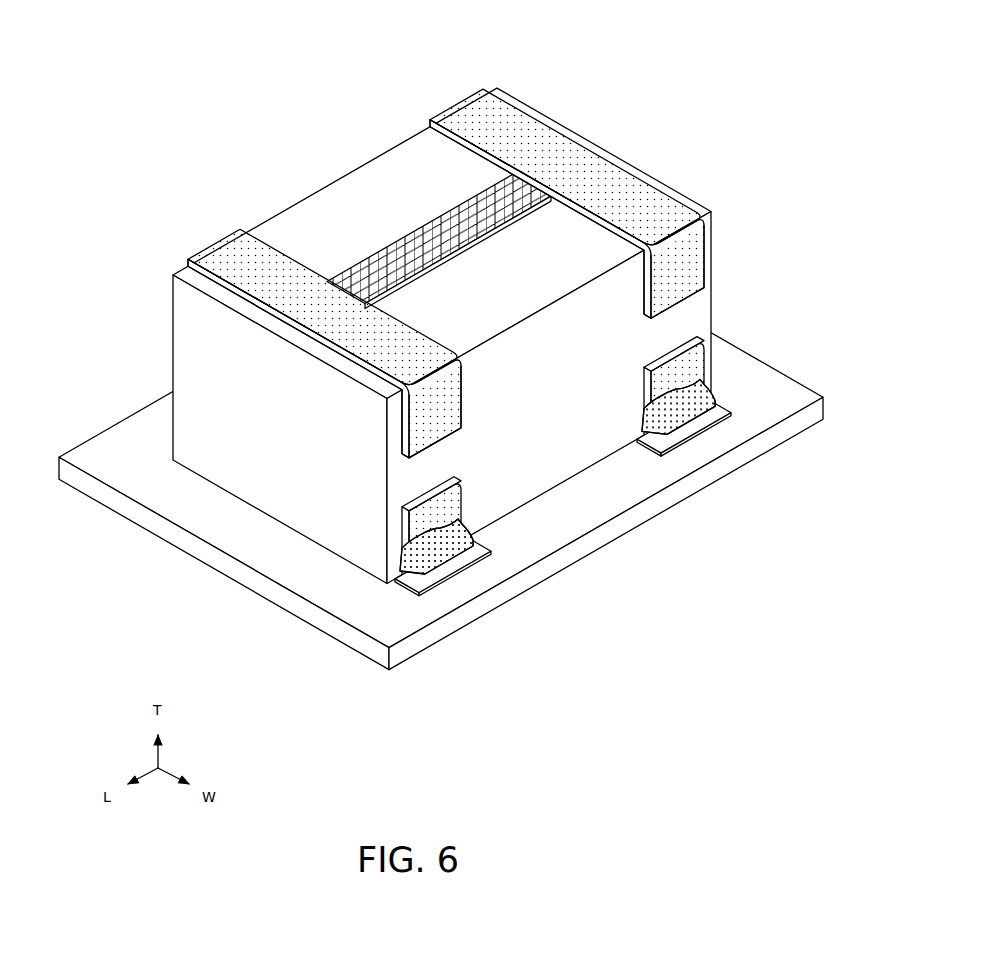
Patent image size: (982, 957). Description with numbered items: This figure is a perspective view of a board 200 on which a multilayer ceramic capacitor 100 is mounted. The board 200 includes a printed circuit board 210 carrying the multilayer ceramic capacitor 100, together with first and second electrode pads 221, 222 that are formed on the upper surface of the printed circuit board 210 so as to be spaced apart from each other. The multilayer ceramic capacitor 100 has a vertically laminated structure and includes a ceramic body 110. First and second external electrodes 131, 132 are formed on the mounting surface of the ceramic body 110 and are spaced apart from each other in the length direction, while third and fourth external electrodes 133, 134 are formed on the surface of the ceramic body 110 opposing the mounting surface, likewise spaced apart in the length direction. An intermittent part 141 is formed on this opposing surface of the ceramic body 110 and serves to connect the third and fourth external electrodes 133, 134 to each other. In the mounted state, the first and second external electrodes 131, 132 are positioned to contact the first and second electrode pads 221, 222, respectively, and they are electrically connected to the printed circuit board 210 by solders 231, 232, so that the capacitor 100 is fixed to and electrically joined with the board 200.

The multilayer ceramic capacitor 100 is at (477, 331).
The ceramic body 110 is at (395, 168).
The first external electrode 131 is at (447, 507).
The second external electrode 132 is at (680, 368).
The third external electrode 133 is at (223, 257).
The fourth external electrode 134 is at (463, 107).
The intermittent part 141 is at (417, 262).
The board 200 is at (441, 438).
The printed circuit board 210 is at (777, 390).
The first electrode pad 221 is at (427, 577).
The second electrode pad 222 is at (670, 435).
The solder 231 is at (443, 550).
The solder 232 is at (680, 410).